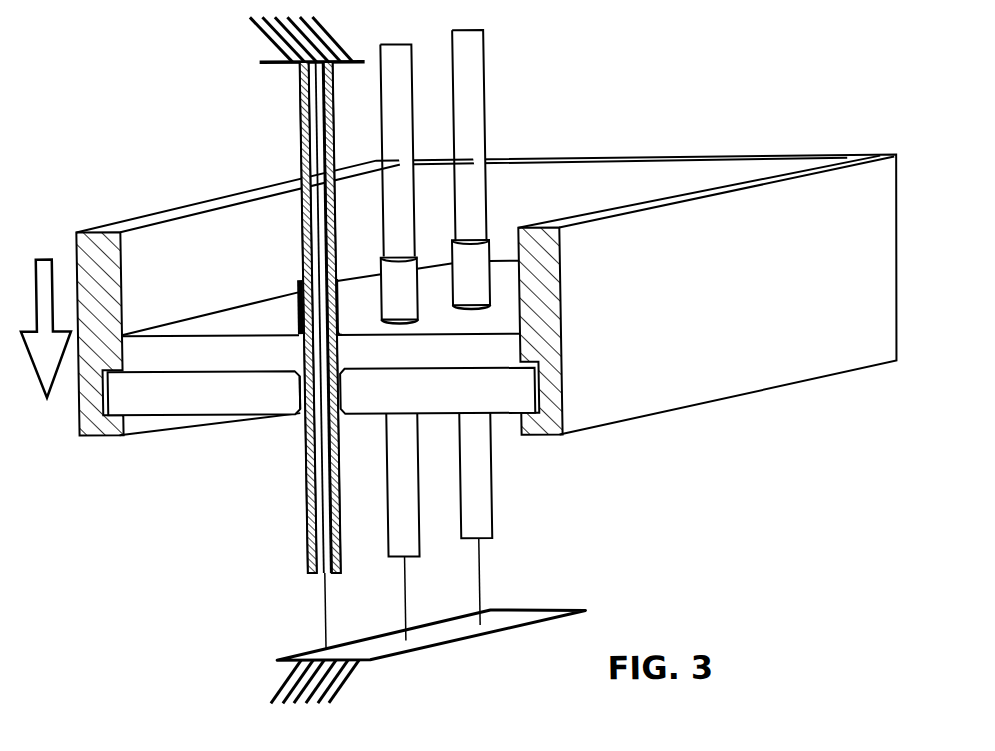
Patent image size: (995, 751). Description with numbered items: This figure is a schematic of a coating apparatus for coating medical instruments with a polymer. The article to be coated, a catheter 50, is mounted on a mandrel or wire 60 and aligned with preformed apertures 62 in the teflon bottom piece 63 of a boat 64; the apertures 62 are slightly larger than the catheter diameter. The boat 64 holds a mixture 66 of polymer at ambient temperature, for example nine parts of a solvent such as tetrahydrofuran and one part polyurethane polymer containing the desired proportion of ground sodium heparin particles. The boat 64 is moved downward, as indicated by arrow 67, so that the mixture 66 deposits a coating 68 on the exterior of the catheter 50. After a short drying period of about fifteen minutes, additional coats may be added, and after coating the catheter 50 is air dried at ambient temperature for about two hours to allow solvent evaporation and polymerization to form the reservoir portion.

The catheter 50 is at (302, 105).
The mandrel or wire 60 is at (320, 155).
The preformed apertures 62 is at (299, 413).
The teflon bottom piece 63 is at (207, 397).
The boat 64 is at (631, 407).
The mixture 66 is at (481, 358).
The arrow 67 is at (46, 339).
The coating 68 is at (300, 248).